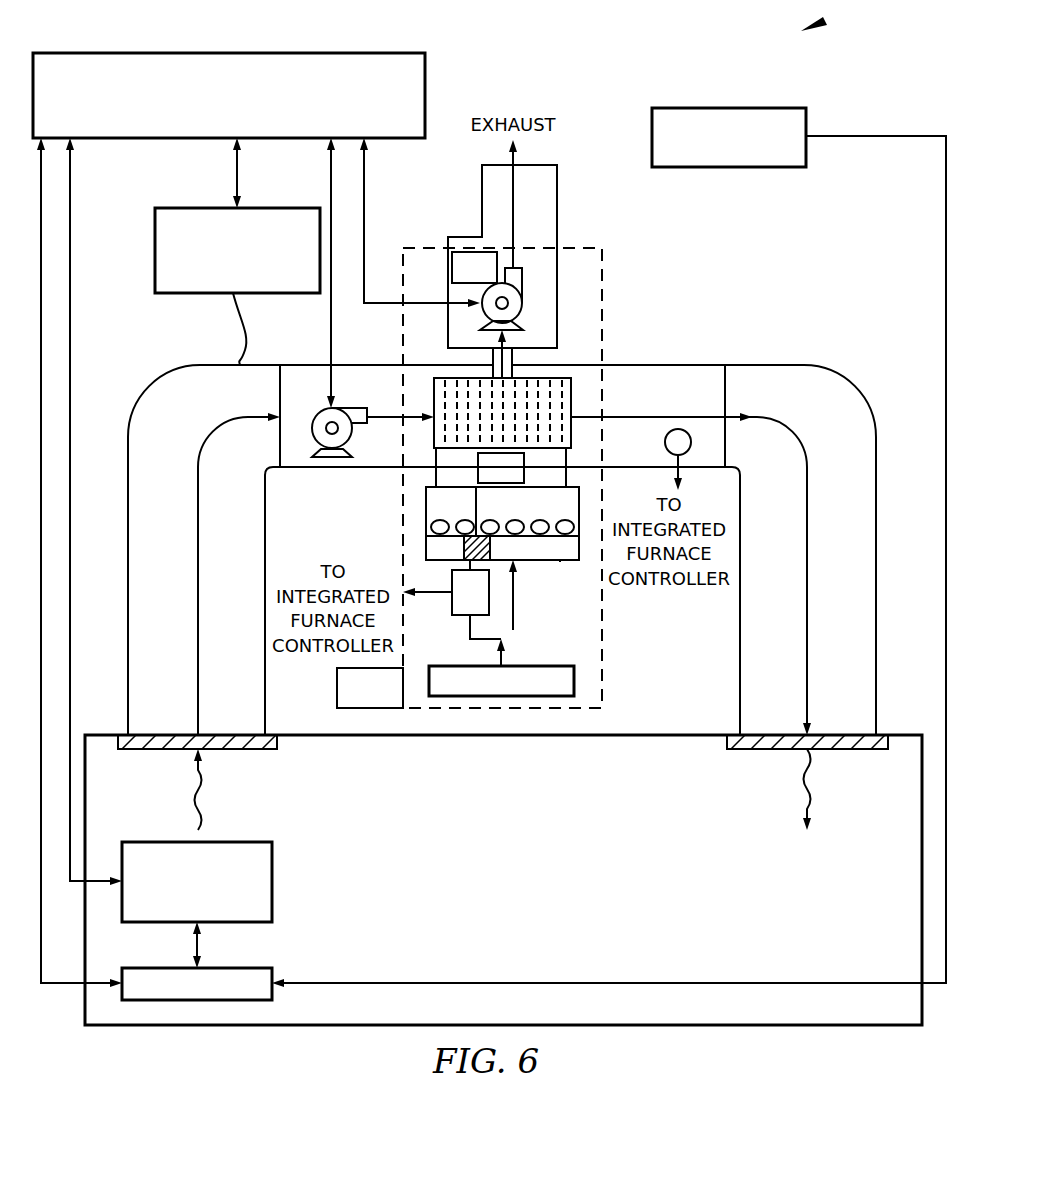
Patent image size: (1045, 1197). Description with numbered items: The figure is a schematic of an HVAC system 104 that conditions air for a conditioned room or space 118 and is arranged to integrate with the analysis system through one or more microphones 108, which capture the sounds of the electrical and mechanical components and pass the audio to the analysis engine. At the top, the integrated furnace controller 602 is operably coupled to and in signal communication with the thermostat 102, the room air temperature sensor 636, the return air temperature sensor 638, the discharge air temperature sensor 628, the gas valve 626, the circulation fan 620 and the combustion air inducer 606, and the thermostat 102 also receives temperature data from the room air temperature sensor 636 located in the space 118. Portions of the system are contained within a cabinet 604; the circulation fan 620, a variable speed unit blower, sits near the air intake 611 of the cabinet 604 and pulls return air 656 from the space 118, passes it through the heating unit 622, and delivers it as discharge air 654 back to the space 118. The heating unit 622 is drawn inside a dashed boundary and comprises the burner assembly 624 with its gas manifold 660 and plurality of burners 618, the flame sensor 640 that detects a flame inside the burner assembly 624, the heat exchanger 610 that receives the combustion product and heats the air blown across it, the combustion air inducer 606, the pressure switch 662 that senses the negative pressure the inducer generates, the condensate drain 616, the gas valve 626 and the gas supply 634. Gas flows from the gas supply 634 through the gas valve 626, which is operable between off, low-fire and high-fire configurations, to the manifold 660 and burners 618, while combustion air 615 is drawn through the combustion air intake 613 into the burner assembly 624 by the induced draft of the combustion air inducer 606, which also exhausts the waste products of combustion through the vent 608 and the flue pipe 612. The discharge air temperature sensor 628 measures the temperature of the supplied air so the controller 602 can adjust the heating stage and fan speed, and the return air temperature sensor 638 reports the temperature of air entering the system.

The HVAC system 104 is at (822, 22).
The integrated furnace controller 602 is at (193, 139).
The return air temperature sensor 638 is at (155, 251).
The microphone 108 is at (748, 167).
The flue pipe 612 is at (545, 200).
The vent 608 is at (520, 267).
The combustion air inducer 606 is at (559, 297).
The pressure switch 662 is at (489, 277).
The heating unit 622 is at (604, 632).
The cabinet 604 is at (293, 450).
The air intake 611 is at (334, 418).
The circulation fan 620 is at (313, 414).
The heat exchanger 610 is at (571, 391).
The flame sensor 640 is at (487, 477).
The burner assembly 624 is at (465, 520).
The burners 618 is at (426, 529).
The gas manifold 660 is at (560, 560).
The gas valve 626 is at (484, 602).
The combustion air intake 613 is at (542, 658).
The combustion air 615 is at (516, 600).
The condensate drain 616 is at (355, 700).
The gas supply 634 is at (574, 681).
The discharge air temperature sensor 628 is at (691, 441).
The space 118 is at (859, 934).
The return air 656 is at (204, 797).
The discharge air 654 is at (801, 778).
The room air temperature sensor 636 is at (272, 881).
The thermostat 102 is at (237, 968).